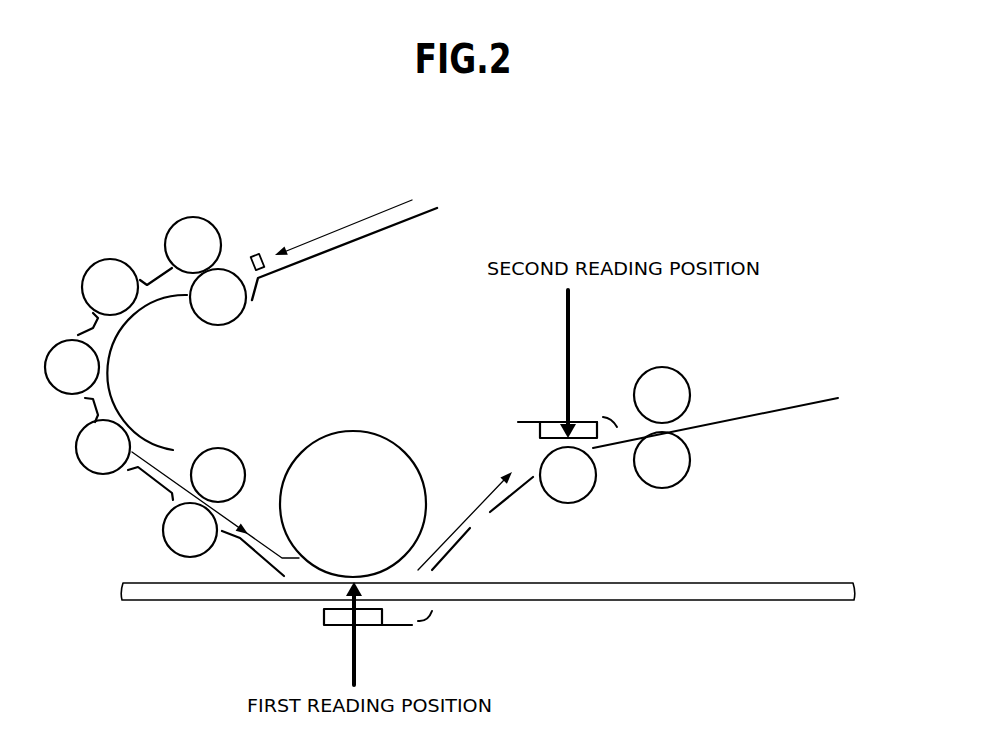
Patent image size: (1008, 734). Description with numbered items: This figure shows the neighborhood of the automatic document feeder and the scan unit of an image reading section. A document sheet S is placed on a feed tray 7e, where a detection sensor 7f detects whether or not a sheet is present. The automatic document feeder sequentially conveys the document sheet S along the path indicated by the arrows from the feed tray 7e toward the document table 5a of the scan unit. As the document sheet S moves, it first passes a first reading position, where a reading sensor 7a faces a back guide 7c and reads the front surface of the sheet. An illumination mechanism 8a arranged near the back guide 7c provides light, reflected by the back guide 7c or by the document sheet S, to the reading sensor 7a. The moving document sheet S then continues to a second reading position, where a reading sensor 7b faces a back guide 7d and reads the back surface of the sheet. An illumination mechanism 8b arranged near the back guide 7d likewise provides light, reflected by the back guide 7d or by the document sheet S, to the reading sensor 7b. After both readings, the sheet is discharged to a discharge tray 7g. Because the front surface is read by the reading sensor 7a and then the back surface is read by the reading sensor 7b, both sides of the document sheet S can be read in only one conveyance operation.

The document table 5a is at (763, 590).
The reading sensor 7a is at (398, 630).
The reading sensor 7b is at (527, 420).
The back guide 7c is at (340, 430).
The back guide 7d is at (575, 497).
The feed tray 7e is at (425, 202).
The detection sensor 7f is at (253, 253).
The discharge tray 7g is at (753, 408).
The illumination mechanism 8a is at (432, 620).
The illumination mechanism 8b is at (605, 415).
The document sheet S is at (340, 227).